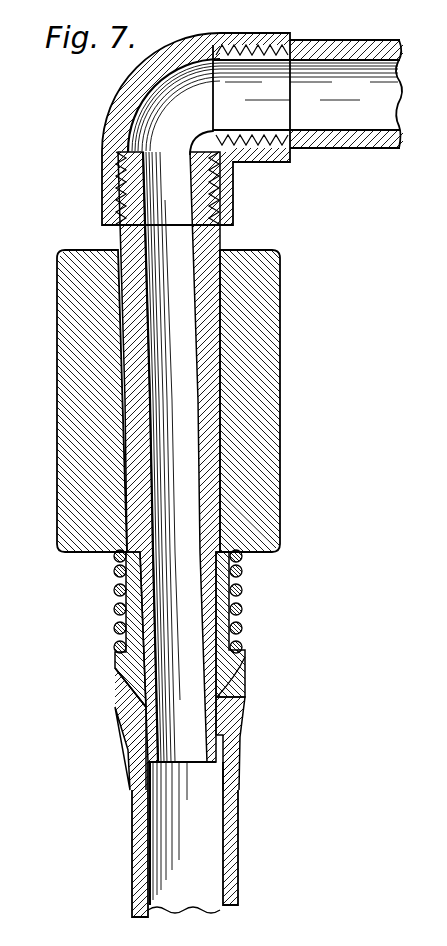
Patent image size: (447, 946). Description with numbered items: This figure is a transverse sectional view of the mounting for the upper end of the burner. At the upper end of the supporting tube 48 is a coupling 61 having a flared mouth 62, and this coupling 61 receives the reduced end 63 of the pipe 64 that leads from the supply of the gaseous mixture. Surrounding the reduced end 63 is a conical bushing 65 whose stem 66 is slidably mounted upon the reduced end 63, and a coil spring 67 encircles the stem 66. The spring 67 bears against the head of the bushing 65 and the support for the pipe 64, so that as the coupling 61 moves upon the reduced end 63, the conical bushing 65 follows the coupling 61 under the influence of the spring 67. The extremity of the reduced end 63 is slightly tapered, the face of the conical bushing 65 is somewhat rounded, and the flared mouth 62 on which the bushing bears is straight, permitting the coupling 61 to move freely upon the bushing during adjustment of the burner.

The supporting tube 48 is at (233, 828).
The coupling 61 is at (171, 729).
The flared mouth 62 is at (224, 679).
The reduced end 63 is at (212, 732).
The pipe 64 is at (215, 420).
The conical bushing 65 is at (242, 652).
The stem 66 is at (207, 617).
The coil spring 67 is at (240, 569).